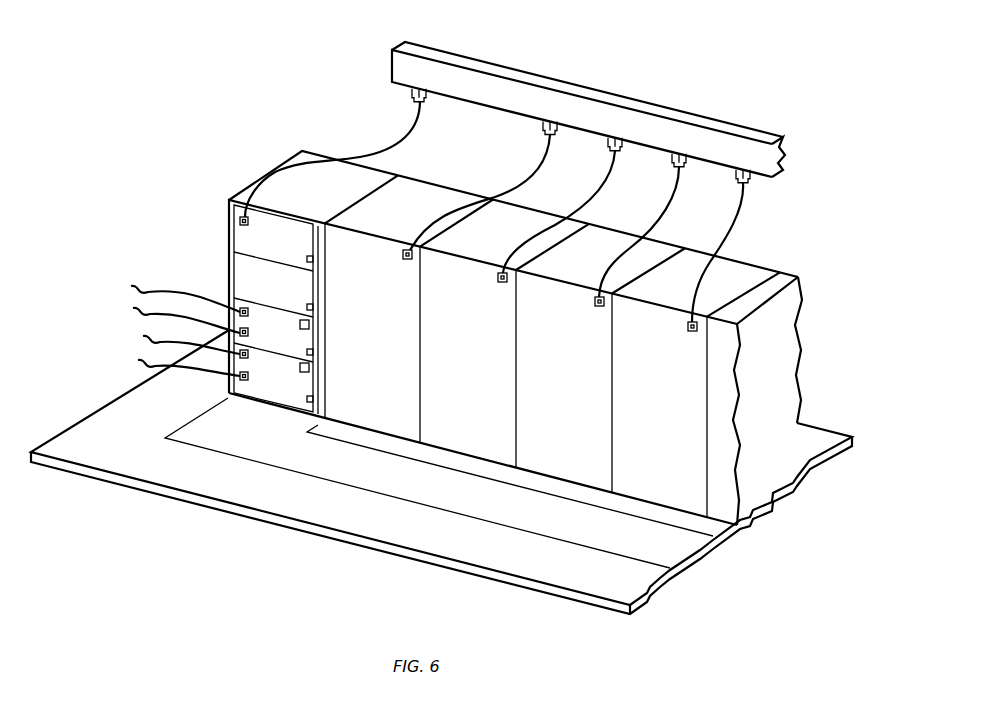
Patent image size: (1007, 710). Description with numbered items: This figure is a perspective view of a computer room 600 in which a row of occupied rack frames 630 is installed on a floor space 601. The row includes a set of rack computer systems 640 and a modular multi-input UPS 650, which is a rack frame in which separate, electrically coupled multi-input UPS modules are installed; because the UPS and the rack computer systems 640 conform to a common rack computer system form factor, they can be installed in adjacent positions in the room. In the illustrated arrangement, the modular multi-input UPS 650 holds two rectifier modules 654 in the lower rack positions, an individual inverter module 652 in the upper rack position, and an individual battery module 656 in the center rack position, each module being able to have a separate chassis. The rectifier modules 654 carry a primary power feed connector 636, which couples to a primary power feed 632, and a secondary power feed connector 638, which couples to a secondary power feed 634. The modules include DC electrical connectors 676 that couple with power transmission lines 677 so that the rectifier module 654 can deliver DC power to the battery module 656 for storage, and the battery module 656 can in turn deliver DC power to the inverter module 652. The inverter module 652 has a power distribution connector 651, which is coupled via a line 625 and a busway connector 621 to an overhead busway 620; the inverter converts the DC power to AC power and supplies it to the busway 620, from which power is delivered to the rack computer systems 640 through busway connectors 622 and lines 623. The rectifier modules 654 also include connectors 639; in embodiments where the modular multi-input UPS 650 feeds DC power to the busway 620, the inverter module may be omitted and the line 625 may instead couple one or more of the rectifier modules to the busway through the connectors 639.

The computer room 600 is at (273, 68).
The floor space 601 is at (130, 454).
The busway 620 is at (766, 136).
The busway connector 621 is at (419, 88).
The busway connectors 622 is at (551, 121).
The lines 623 is at (545, 165).
The line 625 is at (402, 137).
The row of occupied rack frames 630 is at (405, 498).
The primary power feed 632 is at (171, 317).
The secondary power feed 634 is at (171, 339).
The primary power feed connector 636 is at (240, 312).
The secondary power feed connector 638 is at (244, 382).
The connectors 639 is at (306, 366).
The rack computer systems 640 is at (497, 480).
The modular multi-input UPS 650 is at (298, 160).
The power distribution connector 651 is at (240, 220).
The inverter module 652 is at (294, 255).
The rectifier modules 654 is at (294, 341).
The battery module 656 is at (294, 298).
The DC electrical connectors 676 is at (313, 398).
The power transmission lines 677 is at (323, 251).